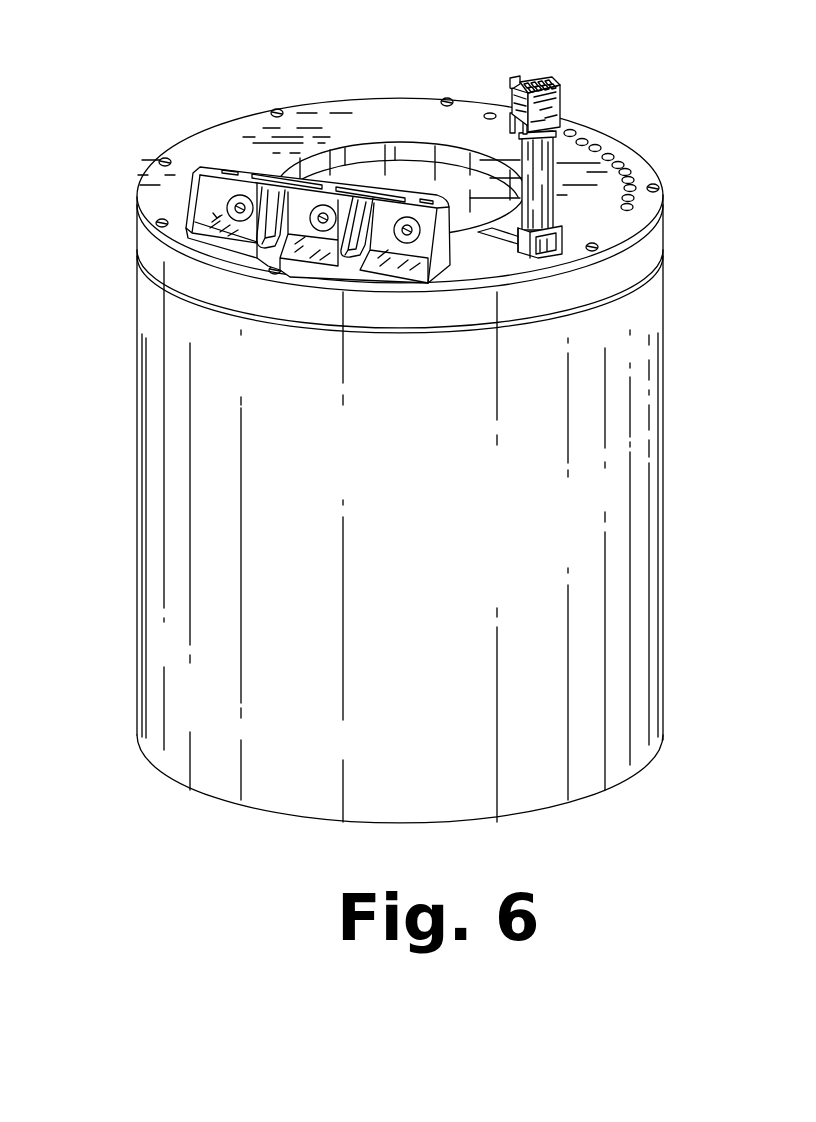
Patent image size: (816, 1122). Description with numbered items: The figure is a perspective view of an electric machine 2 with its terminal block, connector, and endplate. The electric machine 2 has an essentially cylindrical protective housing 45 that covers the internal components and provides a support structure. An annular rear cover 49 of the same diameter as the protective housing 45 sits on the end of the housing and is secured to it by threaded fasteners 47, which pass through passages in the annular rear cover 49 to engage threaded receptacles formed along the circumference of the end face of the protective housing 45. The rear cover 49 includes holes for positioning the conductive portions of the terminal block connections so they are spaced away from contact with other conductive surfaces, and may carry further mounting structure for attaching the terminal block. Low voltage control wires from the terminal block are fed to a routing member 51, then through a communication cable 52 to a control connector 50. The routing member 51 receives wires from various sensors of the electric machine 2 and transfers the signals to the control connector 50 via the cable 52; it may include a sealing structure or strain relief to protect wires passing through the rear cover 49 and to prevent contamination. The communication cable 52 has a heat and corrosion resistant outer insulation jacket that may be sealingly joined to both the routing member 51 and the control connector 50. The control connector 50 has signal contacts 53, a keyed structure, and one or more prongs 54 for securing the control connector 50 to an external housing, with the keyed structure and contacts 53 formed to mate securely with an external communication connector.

The electric machine 2 is at (113, 103).
The protective housing 45 is at (160, 490).
The threaded fasteners 47 is at (276, 112).
The annular rear cover 49 is at (652, 218).
The control connector 50 is at (552, 101).
The routing member 51 is at (545, 242).
The communication cable 52 is at (545, 167).
The signal contacts 53 is at (535, 82).
The prongs 54 is at (527, 80).